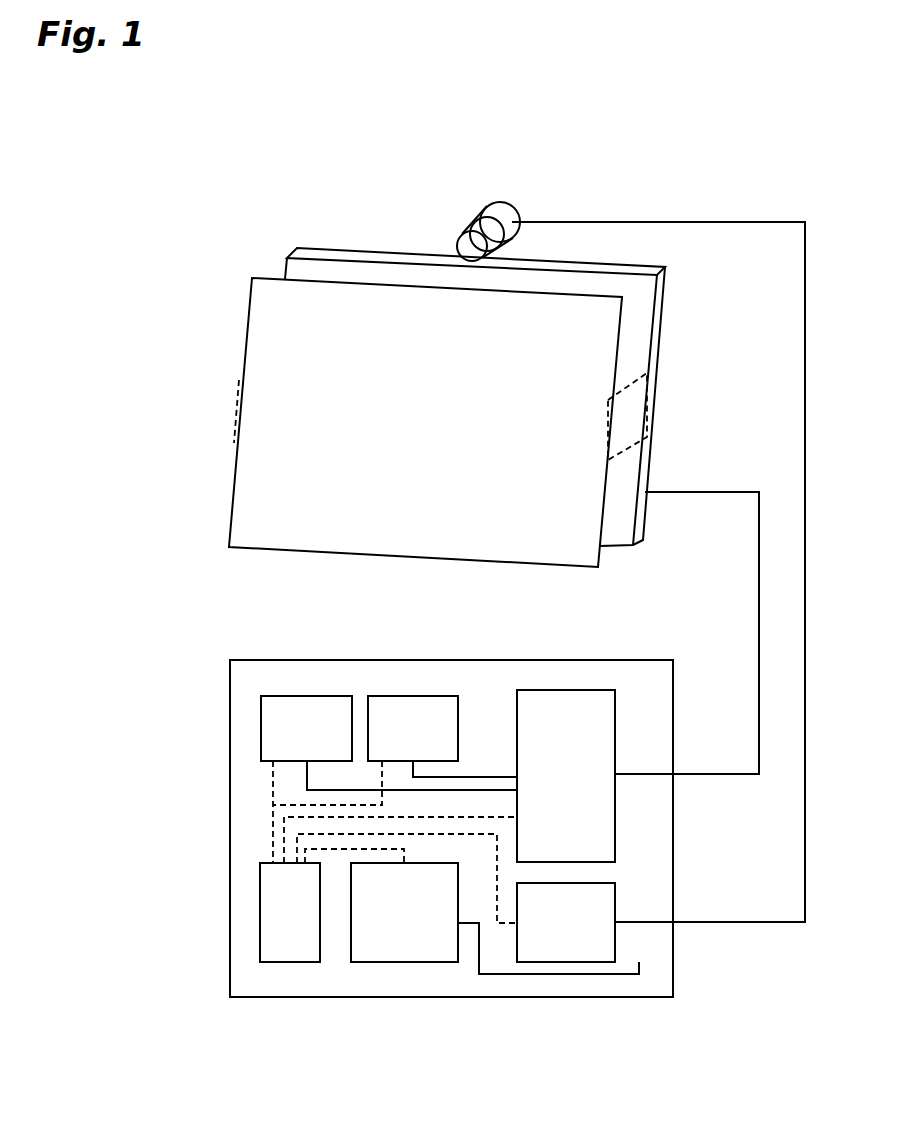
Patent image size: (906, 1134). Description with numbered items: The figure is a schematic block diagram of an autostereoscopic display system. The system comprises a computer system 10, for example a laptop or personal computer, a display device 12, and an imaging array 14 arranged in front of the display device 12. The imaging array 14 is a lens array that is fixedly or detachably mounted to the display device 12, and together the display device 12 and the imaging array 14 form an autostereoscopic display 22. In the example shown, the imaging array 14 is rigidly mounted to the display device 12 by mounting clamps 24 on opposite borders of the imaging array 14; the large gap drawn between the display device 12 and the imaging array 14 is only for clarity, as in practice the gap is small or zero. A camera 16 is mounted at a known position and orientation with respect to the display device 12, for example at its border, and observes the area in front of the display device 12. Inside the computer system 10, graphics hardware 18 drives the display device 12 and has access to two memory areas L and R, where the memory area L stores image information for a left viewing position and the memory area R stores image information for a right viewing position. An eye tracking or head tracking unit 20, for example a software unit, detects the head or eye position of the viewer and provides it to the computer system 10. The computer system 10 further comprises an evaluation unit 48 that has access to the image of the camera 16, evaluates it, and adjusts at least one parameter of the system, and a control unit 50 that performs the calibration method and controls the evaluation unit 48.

The computer system 10 is at (590, 651).
The display device 12 is at (640, 268).
The imaging array 14 is at (262, 298).
The camera 16 is at (460, 229).
The graphics hardware 18 is at (615, 736).
The eye tracking or head tracking unit 20 is at (615, 900).
The autostereoscopic display 22 is at (236, 229).
The mounting clamps 24 is at (233, 432).
The evaluation unit 48 is at (392, 962).
The control unit 50 is at (285, 962).
The memory area L is at (285, 696).
The memory area R is at (392, 696).